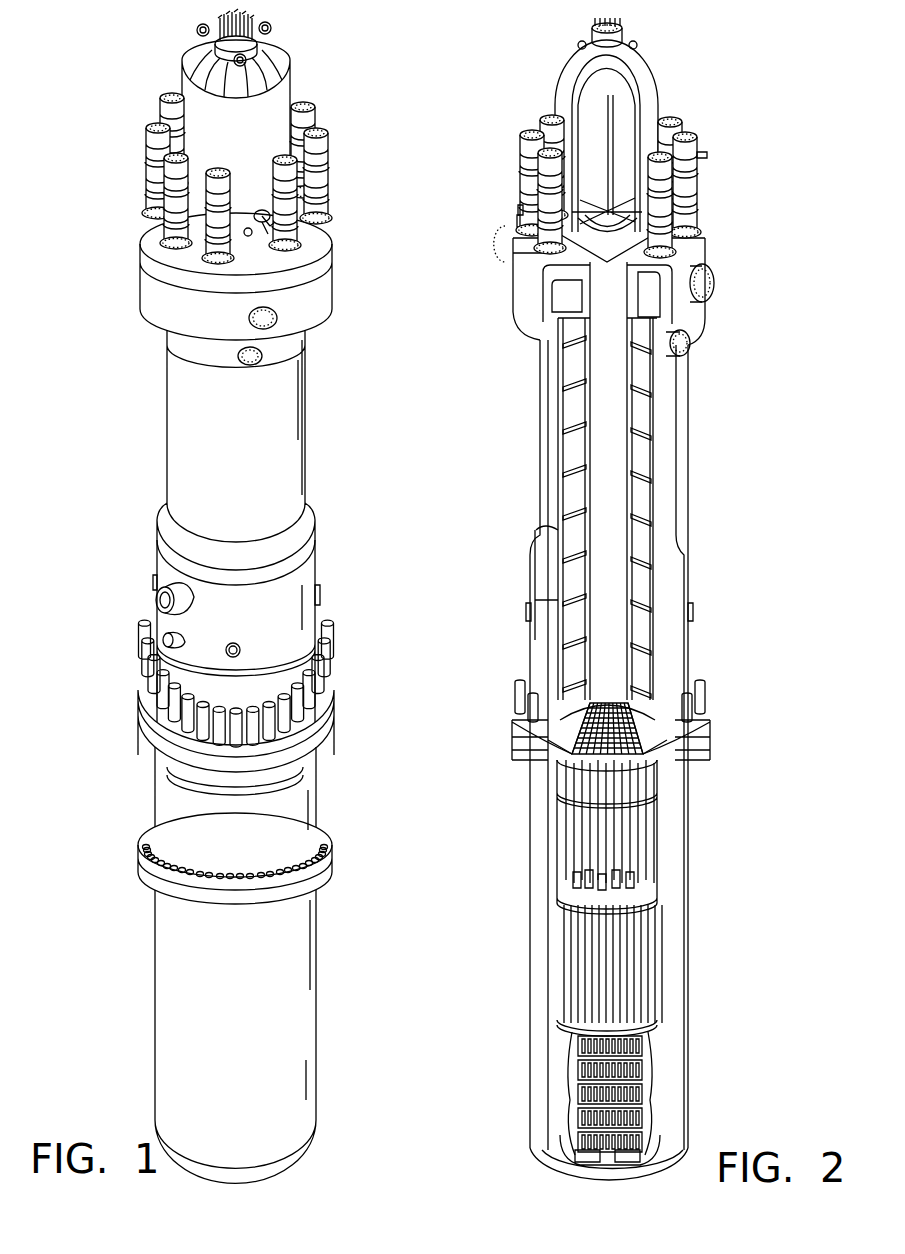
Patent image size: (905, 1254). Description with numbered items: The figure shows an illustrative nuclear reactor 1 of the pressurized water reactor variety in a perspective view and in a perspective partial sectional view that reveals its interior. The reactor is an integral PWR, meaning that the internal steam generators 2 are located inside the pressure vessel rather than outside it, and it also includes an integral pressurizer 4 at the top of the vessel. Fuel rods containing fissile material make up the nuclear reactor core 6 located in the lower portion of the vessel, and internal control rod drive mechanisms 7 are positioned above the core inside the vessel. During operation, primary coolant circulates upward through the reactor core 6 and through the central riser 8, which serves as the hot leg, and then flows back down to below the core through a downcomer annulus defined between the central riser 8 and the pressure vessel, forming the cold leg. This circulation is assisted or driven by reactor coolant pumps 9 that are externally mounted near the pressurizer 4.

In FIG. 1, the nuclear reactor 1 is at (262, 618).
In FIG. 2, the internal steam generators 2 is at (575, 413).
In FIG. 2, the integral pressurizer 4 is at (630, 102).
In FIG. 2, the nuclear reactor core 6 is at (608, 1092).
In FIG. 2, the internal control rod drive mechanisms 7 is at (590, 868).
In FIG. 2, the central riser 8 is at (610, 490).
In FIG. 1, the reactor coolant pumps 9 is at (318, 188).
In FIG. 2, the reactor coolant pumps 9 is at (688, 193).